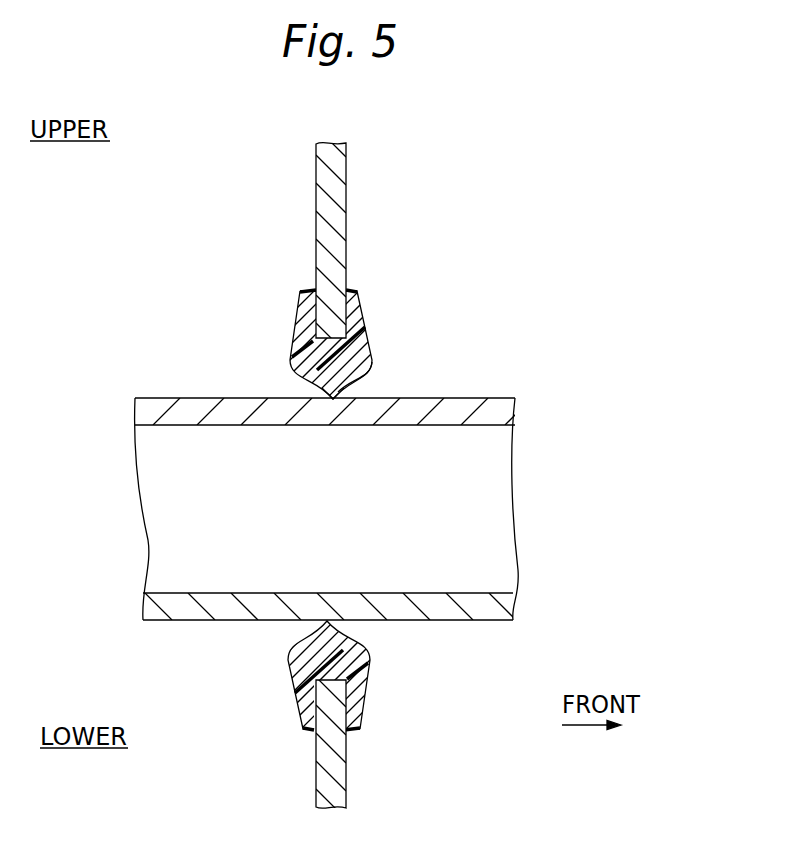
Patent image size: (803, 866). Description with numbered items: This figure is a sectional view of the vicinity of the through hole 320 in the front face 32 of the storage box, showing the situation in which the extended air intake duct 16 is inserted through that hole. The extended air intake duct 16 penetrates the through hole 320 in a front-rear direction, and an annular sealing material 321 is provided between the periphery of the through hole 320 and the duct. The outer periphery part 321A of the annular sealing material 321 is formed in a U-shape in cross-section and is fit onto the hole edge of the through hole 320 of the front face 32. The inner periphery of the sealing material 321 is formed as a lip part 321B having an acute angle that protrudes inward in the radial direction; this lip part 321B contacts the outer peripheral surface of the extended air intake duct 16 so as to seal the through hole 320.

The extended air intake duct 16 is at (468, 399).
The front face 32 is at (348, 193).
The through hole 320 is at (315, 387).
The annular sealing material 321 is at (351, 315).
The outer periphery part 321A is at (303, 299).
The lip part 321B is at (345, 388).